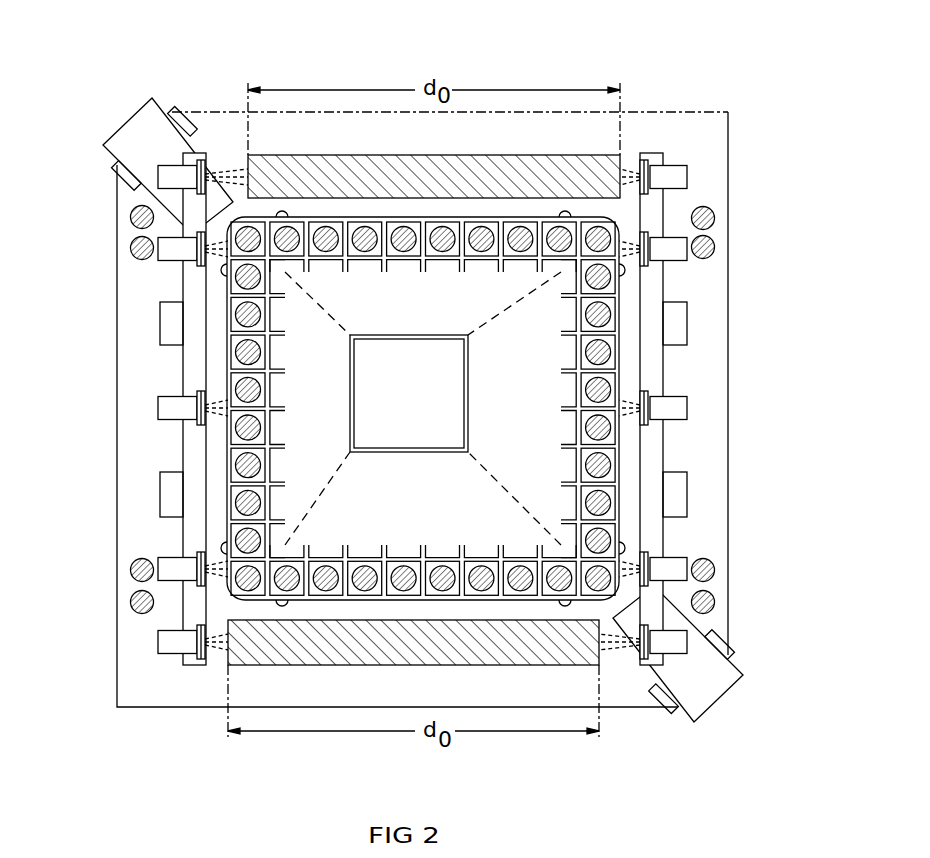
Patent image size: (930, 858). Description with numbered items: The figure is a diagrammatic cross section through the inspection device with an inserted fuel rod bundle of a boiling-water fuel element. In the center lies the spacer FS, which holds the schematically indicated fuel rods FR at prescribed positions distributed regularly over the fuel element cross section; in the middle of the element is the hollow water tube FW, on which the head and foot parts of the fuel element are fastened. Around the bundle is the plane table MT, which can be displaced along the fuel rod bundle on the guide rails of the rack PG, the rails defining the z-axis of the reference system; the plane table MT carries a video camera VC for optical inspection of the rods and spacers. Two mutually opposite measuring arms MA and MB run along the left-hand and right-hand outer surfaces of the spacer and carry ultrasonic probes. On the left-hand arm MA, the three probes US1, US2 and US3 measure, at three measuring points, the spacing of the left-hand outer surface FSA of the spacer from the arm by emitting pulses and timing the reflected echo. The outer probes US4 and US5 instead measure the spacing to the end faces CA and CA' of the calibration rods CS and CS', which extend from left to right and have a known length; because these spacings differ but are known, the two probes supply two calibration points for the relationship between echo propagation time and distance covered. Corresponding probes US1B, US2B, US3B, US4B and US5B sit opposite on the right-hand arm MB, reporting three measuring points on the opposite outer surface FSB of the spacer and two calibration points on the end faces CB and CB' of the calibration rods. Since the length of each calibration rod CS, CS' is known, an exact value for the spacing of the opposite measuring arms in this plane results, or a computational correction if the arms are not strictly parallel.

The video camera VC is at (135, 127).
The end face of calibration rod CA is at (226, 107).
The calibration rod CS is at (434, 114).
The spacer FS is at (523, 217).
The end face of calibration rod CB is at (652, 107).
The plane table MT is at (688, 122).
The ultrasonic probe US4 is at (158, 179).
The ultrasonic probe US4B is at (687, 179).
The rack of guide rails PG is at (131, 216).
The ultrasonic probe US1 is at (158, 250).
The ultrasonic probe US1B is at (687, 253).
The left-hand outer surface of the spacer FSA is at (228, 352).
The right-hand outer surface of the spacer FSB is at (619, 352).
The ultrasonic probe US2 is at (158, 408).
The ultrasonic probe US2B is at (687, 408).
The measuring arm MA is at (190, 448).
The measuring arm MB is at (655, 450).
The ultrasonic probe US3 is at (158, 562).
The ultrasonic probe US3B is at (687, 562).
The ultrasonic probe US5 is at (158, 643).
The ultrasonic probe US5B is at (687, 643).
The fuel rod FR is at (481, 256).
The water tube FW is at (465, 393).
The end face of calibration rod CA' is at (205, 717).
The calibration rod CS' is at (413, 710).
The end face of calibration rod CB' is at (635, 717).